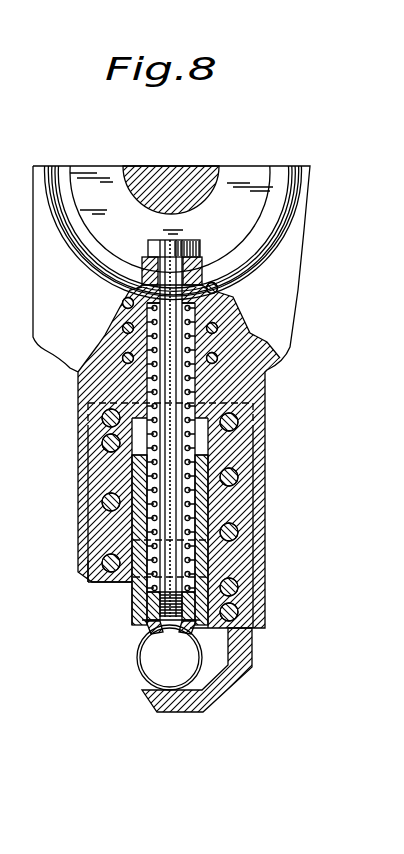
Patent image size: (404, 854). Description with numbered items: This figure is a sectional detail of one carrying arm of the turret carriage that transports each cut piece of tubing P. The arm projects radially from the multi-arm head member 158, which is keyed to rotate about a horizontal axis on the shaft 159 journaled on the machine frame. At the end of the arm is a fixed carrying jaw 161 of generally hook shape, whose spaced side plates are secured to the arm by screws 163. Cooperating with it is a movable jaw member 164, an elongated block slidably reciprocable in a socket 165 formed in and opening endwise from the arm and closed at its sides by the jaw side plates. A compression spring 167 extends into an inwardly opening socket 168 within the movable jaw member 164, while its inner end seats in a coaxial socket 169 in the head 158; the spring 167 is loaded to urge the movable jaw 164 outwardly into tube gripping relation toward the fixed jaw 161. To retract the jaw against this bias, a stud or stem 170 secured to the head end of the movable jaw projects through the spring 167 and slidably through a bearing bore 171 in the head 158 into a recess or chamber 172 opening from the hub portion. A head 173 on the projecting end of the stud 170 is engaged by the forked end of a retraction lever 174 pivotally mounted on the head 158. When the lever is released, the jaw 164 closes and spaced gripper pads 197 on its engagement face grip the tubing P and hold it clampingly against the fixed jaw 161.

The multi-arm head member 158 is at (290, 297).
The shaft 159 is at (205, 172).
The fixed carrying jaw 161 is at (190, 713).
The screws 163 is at (92, 575).
The movable jaw member 164 is at (137, 608).
The socket 165 is at (133, 519).
The compression spring 167 is at (207, 446).
The inwardly opening socket 168 is at (148, 470).
The socket 169 is at (148, 378).
The stud or stem 170 is at (88, 405).
The bearing bore 171 is at (227, 290).
The recess or chamber 172 is at (281, 229).
The head 173 is at (201, 250).
The forked retraction lever 174 is at (143, 277).
The gripper pads 197 is at (148, 628).
The tubing P is at (137, 670).